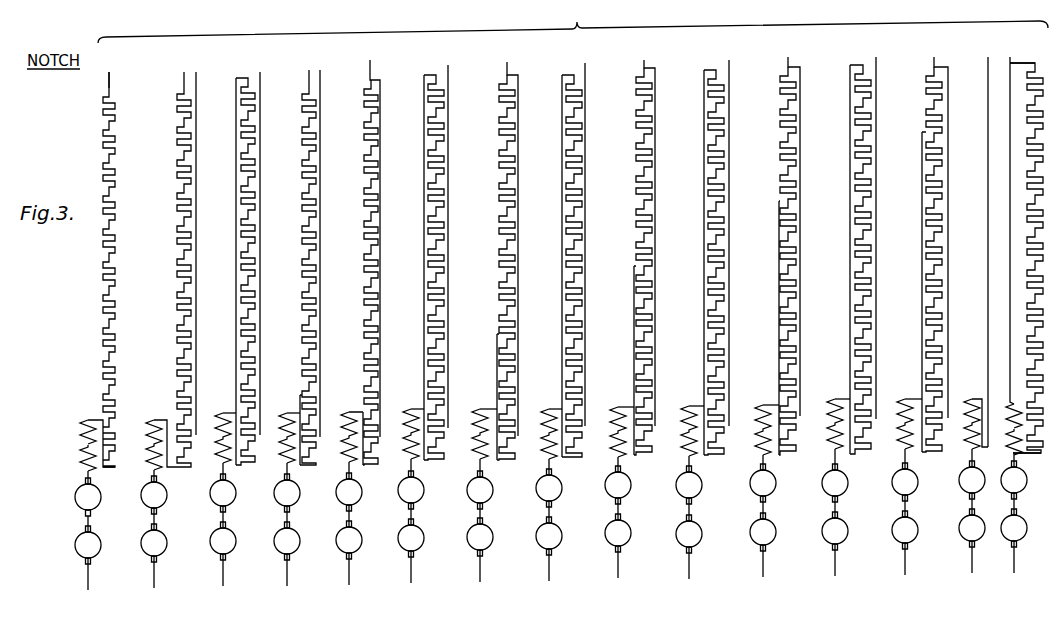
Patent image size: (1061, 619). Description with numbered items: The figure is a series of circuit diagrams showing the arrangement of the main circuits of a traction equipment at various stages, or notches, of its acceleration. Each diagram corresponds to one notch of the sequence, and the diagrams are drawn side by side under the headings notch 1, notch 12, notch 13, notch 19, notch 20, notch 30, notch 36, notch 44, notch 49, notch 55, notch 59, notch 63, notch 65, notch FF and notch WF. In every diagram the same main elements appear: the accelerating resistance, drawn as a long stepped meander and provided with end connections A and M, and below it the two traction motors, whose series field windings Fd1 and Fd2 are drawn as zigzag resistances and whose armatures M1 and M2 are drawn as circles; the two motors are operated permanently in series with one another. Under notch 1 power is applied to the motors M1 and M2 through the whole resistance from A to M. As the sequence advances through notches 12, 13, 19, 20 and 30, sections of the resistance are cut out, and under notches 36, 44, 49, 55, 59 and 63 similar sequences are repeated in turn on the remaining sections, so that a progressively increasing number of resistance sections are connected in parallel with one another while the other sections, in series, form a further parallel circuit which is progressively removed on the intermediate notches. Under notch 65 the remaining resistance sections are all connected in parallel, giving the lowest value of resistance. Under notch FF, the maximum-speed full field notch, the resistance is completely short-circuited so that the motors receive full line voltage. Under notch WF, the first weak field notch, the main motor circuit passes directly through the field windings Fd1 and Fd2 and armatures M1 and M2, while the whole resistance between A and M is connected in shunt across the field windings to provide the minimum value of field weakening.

The notch 1 is at (111, 68).
The notch 12 is at (177, 67).
The notch 13 is at (239, 66).
The notch 19 is at (302, 65).
The notch 20 is at (362, 64).
The notch 30 is at (424, 62).
The notch 36 is at (495, 62).
The notch 44 is at (563, 62).
The notch 49 is at (637, 59).
The notch 55 is at (707, 57).
The notch 59 is at (782, 55).
The notch 63 is at (852, 55).
The notch 65 is at (925, 54).
The maximum full field notch FF is at (976, 54).
The weak field notch WF is at (1017, 54).
The series field winding Fd1 is at (80, 427).
The series field winding Fd2 is at (80, 461).
The armature M1 is at (75, 498).
The armature M2 is at (77, 548).
The end connection M is at (579, 458).
The end connection A is at (580, 73).